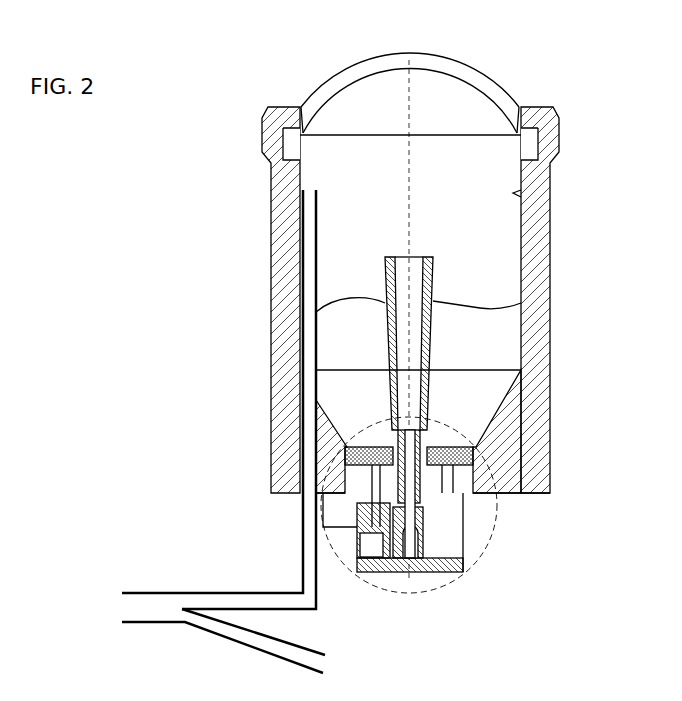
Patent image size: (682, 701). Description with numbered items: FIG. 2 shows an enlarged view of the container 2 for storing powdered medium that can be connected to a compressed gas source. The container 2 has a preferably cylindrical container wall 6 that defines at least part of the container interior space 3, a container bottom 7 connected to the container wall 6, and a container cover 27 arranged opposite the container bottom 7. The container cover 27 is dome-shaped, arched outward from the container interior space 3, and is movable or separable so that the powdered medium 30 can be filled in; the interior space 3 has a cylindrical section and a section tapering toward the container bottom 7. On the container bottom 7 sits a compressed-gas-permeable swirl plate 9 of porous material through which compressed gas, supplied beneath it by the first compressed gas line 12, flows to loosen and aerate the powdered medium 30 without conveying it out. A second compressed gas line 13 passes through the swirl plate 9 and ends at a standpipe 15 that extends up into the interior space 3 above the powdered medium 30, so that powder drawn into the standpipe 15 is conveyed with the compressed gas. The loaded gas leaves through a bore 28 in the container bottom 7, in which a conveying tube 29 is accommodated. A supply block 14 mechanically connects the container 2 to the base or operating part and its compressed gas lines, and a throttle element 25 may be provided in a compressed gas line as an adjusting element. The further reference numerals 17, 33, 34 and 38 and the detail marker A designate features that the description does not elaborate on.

The container 2 is at (522, 53).
The container interior space 3 is at (470, 219).
The container wall 6 is at (543, 250).
The container bottom 7 is at (510, 493).
The compressed-gas-permeable swirl plate 9 is at (470, 456).
The first compressed gas line 12 is at (380, 507).
The second compressed gas line 13 is at (413, 520).
The supply block 14 is at (457, 557).
The standpipe 15 is at (385, 270).
The hub 17 is at (427, 440).
The throttle element 25 is at (232, 630).
The container cover 27 is at (333, 76).
The bore 28 is at (312, 425).
The conveying tube 29 is at (312, 308).
The powdered medium 30 is at (490, 356).
The discharge line 33 is at (323, 653).
The body block 34 is at (505, 388).
The seal ring 38 is at (513, 193).
The detail region A is at (368, 582).